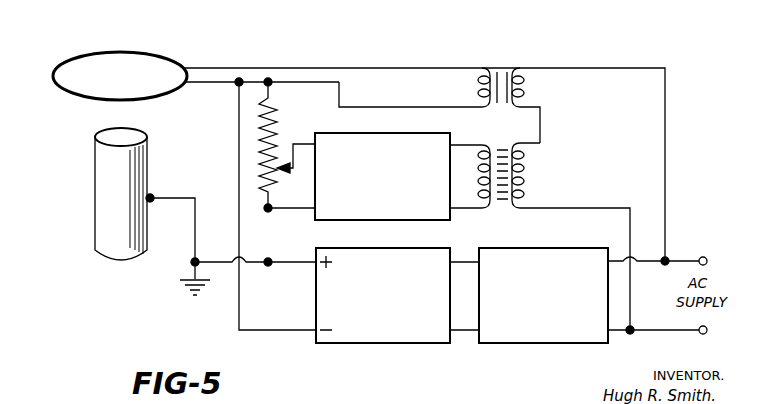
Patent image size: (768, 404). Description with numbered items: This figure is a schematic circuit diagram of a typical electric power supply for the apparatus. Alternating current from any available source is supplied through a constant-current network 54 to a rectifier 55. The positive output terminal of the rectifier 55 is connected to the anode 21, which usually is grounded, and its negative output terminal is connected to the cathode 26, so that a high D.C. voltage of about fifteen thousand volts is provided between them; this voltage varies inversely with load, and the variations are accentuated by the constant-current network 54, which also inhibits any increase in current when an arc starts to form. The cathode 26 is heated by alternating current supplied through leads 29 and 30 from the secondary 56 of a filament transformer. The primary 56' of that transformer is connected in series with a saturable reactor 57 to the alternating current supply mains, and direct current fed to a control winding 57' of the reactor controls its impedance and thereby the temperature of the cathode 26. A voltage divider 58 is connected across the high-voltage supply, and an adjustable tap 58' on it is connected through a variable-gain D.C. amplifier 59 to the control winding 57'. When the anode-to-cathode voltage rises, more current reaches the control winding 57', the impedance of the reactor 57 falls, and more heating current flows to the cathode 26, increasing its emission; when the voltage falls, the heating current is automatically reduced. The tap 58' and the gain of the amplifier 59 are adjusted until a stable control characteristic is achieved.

The anode 21 is at (95, 188).
The cathode 26 is at (141, 52).
The lead 29 is at (216, 83).
The lead 30 is at (206, 67).
The constant-current network 54 is at (549, 250).
The rectifier 55 is at (386, 344).
The secondary of filament transformer 56 is at (414, 87).
The primary of filament transformer 56' is at (535, 105).
The saturable reactor 57 is at (571, 236).
The control winding 57' is at (470, 176).
The voltage divider 58 is at (283, 145).
The adjustable tap 58' is at (296, 172).
The variable-gain D.C. amplifier 59 is at (451, 221).